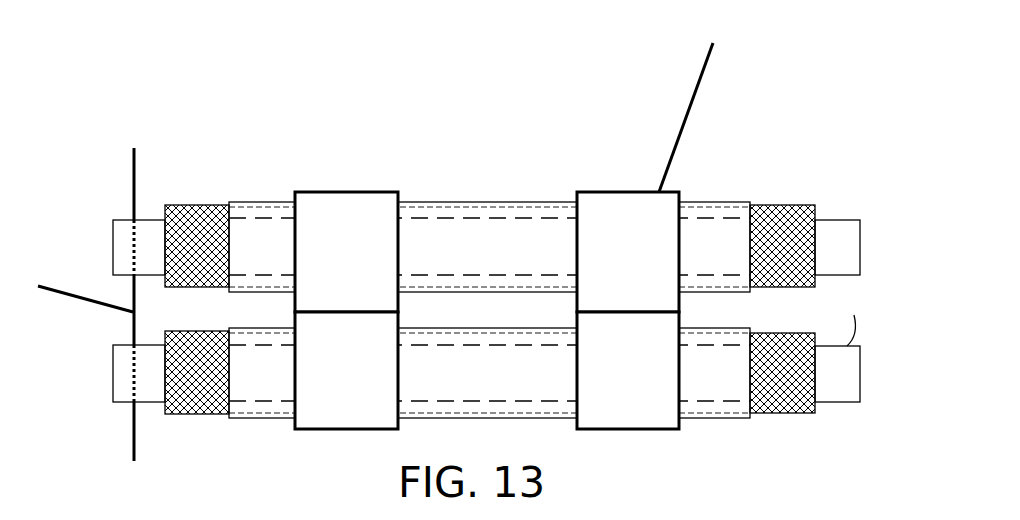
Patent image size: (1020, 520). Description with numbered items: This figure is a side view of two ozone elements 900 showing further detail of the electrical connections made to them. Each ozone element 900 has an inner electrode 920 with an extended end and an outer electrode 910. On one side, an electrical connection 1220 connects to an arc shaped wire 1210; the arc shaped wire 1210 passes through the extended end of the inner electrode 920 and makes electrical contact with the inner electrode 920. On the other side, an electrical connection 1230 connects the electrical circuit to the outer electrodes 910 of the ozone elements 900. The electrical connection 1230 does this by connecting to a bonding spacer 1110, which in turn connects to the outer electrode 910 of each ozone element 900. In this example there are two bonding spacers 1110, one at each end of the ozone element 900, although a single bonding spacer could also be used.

The ozone element 900 is at (451, 189).
The outer electrode 910 is at (530, 202).
The inner electrode 920 is at (845, 220).
The bonding spacer 1110 is at (340, 192).
The arc shaped wire 1210 is at (136, 175).
The electrical connection 1220 is at (57, 291).
The electrical connection 1230 is at (690, 108).